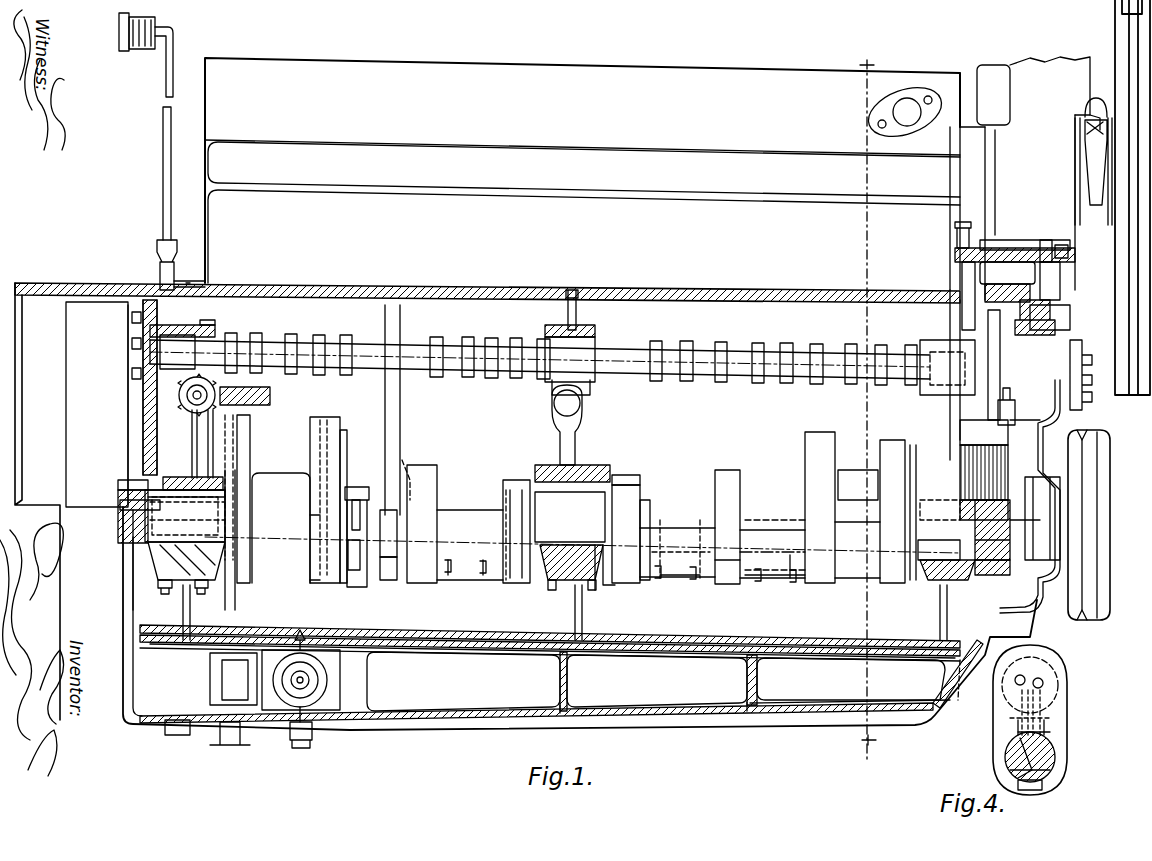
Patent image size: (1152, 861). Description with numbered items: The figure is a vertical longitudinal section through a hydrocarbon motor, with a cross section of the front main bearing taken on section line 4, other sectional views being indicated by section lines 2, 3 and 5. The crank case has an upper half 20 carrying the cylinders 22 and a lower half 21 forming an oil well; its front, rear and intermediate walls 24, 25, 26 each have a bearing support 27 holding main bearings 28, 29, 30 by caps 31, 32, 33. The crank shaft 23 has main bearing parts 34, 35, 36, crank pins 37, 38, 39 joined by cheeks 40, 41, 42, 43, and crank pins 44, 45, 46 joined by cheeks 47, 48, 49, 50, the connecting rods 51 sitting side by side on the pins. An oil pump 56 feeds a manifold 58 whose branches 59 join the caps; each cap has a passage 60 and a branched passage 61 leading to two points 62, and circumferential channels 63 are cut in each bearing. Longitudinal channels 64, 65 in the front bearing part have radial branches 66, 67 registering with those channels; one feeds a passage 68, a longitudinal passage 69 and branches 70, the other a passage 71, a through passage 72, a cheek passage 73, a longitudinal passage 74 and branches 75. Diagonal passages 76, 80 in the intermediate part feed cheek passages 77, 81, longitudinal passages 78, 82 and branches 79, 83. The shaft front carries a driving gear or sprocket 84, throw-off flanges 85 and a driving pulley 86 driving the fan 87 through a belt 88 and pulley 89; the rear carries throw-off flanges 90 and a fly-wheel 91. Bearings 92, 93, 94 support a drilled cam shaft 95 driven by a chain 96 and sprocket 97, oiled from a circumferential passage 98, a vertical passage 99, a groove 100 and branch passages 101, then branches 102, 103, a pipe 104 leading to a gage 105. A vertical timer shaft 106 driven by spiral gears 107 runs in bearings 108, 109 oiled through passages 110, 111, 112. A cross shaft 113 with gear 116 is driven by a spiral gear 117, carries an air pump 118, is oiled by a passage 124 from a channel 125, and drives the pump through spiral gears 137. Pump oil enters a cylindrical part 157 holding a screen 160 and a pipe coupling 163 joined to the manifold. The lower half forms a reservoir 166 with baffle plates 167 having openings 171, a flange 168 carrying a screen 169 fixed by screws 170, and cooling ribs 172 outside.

In FIG. 1, the section line 2- 2 is at (873, 405).
In FIG. 1, the section line 3- 3 is at (304, 740).
In FIG. 1, the section line 4— 4 is at (908, 508).
In FIG. 1, the crank web 5 is at (322, 602).
In FIG. 1, the upper half of crank case 20 is at (458, 283).
In FIG. 1, the lower half of crank case 21 is at (410, 740).
In FIG. 1, the cylinders 22 is at (471, 78).
In FIG. 1, the crank shaft 23 is at (745, 500).
In FIG. 4, the crank shaft 23 is at (1044, 683).
In FIG. 1, the front partition or wall 24 is at (985, 470).
In FIG. 1, the rear partition or wall 25 is at (236, 425).
In FIG. 1, the intermediate partition or wall 26 is at (578, 448).
In FIG. 1, the bearing receiving part or support 27 is at (165, 482).
In FIG. 1, the front main bearing 28 is at (925, 510).
In FIG. 1, the intermediate main bearing 29 is at (600, 470).
In FIG. 1, the rear main bearing 30 is at (200, 465).
In FIG. 1, the cap 31 is at (930, 572).
In FIG. 1, the cap 32 is at (603, 580).
In FIG. 1, the cap 33 is at (188, 591).
In FIG. 1, the front main bearing part 34 is at (915, 550).
In FIG. 4, the front main bearing part 34 is at (1042, 775).
In FIG. 1, the intermediate main bearing part 35 is at (535, 495).
In FIG. 1, the rear main bearing part 36 is at (232, 540).
In FIG. 1, the crank pin 37 is at (860, 478).
In FIG. 1, the crank pin 38 is at (768, 575).
In FIG. 1, the crank pin 39 is at (680, 580).
In FIG. 1, the cheek 40 is at (895, 440).
In FIG. 4, the cheek 40 is at (1055, 708).
In FIG. 1, the cheek 41 is at (812, 450).
In FIG. 1, the cheek 42 is at (718, 475).
In FIG. 1, the cheek 43 is at (625, 500).
In FIG. 1, the crank pin 44 is at (450, 520).
In FIG. 1, the crank pin 45 is at (402, 490).
In FIG. 1, the crank pin 46 is at (290, 470).
In FIG. 1, the cheek 47 is at (540, 500).
In FIG. 1, the cheek 48 is at (420, 475).
In FIG. 1, the cheek 49 is at (335, 430).
In FIG. 1, the cheek 50 is at (268, 440).
In FIG. 1, the connecting rods 51 is at (395, 393).
In FIG. 1, the oil pump 56 is at (235, 710).
In FIG. 1, the oil manifold 58 is at (450, 632).
In FIG. 1, the branches 59 is at (180, 603).
In FIG. 1, the passage 60 is at (158, 560).
In FIG. 1, the branched passage 61 is at (240, 560).
In FIG. 1, the separated points 62 is at (590, 540).
In FIG. 1, the channels 63 is at (1035, 536).
In FIG. 1, the longitudinal channel 64 is at (150, 510).
In FIG. 4, the longitudinal channel 64 is at (1012, 760).
In FIG. 1, the longitudinal channel 65 is at (155, 550).
In FIG. 4, the longitudinal channel 65 is at (1052, 768).
In FIG. 1, the radial branch 66 is at (135, 503).
In FIG. 4, the radial branch 66 is at (1010, 748).
In FIG. 1, the radial branch 67 is at (228, 518).
In FIG. 4, the radial branch 67 is at (1052, 760).
In FIG. 4, the passage 68 is at (1010, 718).
In FIG. 1, the longitudinal passage 69 is at (345, 420).
In FIG. 4, the longitudinal passage 69 is at (1015, 680).
In FIG. 1, the branches 70 is at (338, 418).
In FIG. 4, the branches 70 is at (1036, 660).
In FIG. 4, the passage 71 is at (1045, 720).
In FIG. 1, the passage 72 is at (810, 470).
In FIG. 4, the passage 72 is at (1060, 678).
In FIG. 1, the passage 73 is at (335, 466).
In FIG. 1, the longitudinal passage 74 is at (775, 578).
In FIG. 1, the branches 75 is at (740, 580).
In FIG. 1, the diagonal passage 76 is at (625, 580).
In FIG. 1, the passage 77 is at (652, 505).
In FIG. 1, the longitudinal passage 78 is at (662, 540).
In FIG. 1, the branches 79 is at (676, 540).
In FIG. 1, the diagonal passage 80 is at (640, 470).
In FIG. 1, the passage 81 is at (505, 500).
In FIG. 1, the longitudinal passage 82 is at (430, 572).
In FIG. 1, the branches 83 is at (483, 573).
In FIG. 1, the main driving gear or sprocket 84 is at (1000, 500).
In FIG. 1, the throw-off flanges 85 is at (1030, 580).
In FIG. 1, the driving pulley 86 is at (1098, 515).
In FIG. 1, the fan 87 is at (1110, 76).
In FIG. 1, the belt 88 is at (1085, 445).
In FIG. 1, the pulley 89 is at (1088, 165).
In FIG. 1, the throw-off flanges 90 is at (150, 525).
In FIG. 1, the fly-wheel 91 is at (75, 375).
In FIG. 1, the bearing 92 is at (962, 282).
In FIG. 1, the bearing 93 is at (150, 284).
In FIG. 1, the bearing 94 is at (580, 330).
In FIG. 1, the cam shaft 95 is at (690, 335).
In FIG. 1, the chain 96 is at (1000, 405).
In FIG. 1, the sprocket 97 is at (1010, 250).
In FIG. 1, the outside circumferential passage 98 is at (1110, 540).
In FIG. 1, the passage 99 is at (992, 382).
In FIG. 1, the groove 100 is at (948, 330).
In FIG. 1, the branch passages 101 is at (948, 375).
In FIG. 1, the branch 102 is at (103, 404).
In FIG. 1, the branch 103 is at (598, 345).
In FIG. 1, the pipe 104 is at (163, 203).
In FIG. 1, the gage 105 is at (147, 35).
In FIG. 1, the vertical shaft 106 is at (962, 258).
In FIG. 1, the spiral gears 107 is at (1090, 395).
In FIG. 1, the bearing 108 is at (1060, 318).
In FIG. 1, the bearing 109 is at (1053, 240).
In FIG. 1, the passage 110 is at (958, 240).
In FIG. 1, the passage 111 is at (980, 248).
In FIG. 1, the passage 112 is at (1060, 275).
In FIG. 1, the cross shaft 113 is at (190, 400).
In FIG. 1, the gear 116 is at (180, 394).
In FIG. 1, the spiral gear 117 is at (200, 336).
In FIG. 1, the air pump 118 is at (173, 280).
In FIG. 1, the passage 124 is at (332, 433).
In FIG. 1, the channel 125 is at (160, 490).
In FIG. 1, the spiral gears 137 is at (300, 360).
In FIG. 1, the cylindrical part 157 is at (372, 688).
In FIG. 1, the cylindrical screen 160 is at (312, 710).
In FIG. 1, the pipe coupling 163 is at (320, 660).
In FIG. 1, the reservoir 166 is at (455, 722).
In FIG. 1, the baffle plates 167 is at (740, 683).
In FIG. 1, the flange 168 is at (926, 680).
In FIG. 1, the screen 169 is at (846, 680).
In FIG. 1, the screws 170 is at (790, 645).
In FIG. 1, the small openings 171 is at (745, 725).
In FIG. 1, the cooling ribs 172 is at (800, 725).